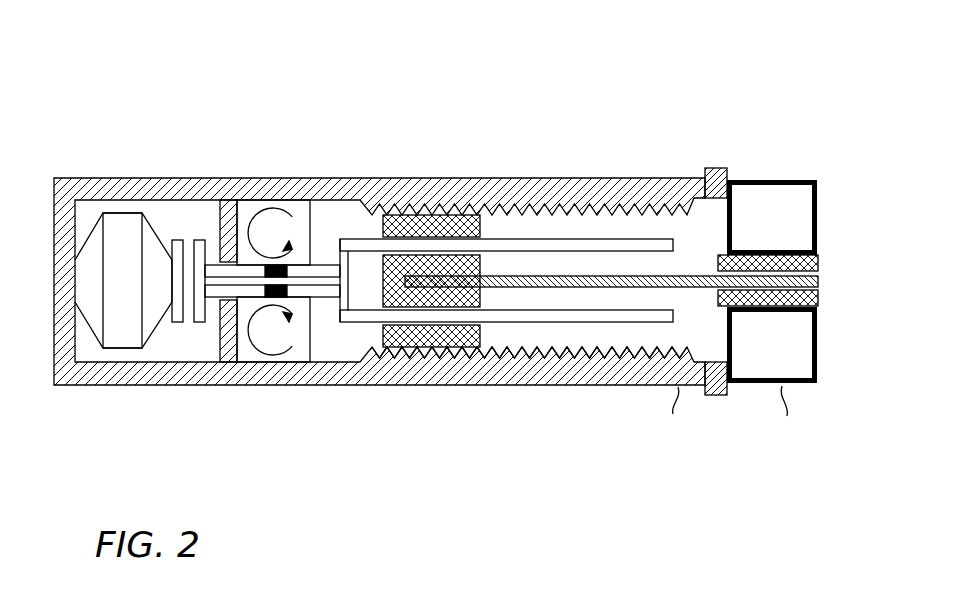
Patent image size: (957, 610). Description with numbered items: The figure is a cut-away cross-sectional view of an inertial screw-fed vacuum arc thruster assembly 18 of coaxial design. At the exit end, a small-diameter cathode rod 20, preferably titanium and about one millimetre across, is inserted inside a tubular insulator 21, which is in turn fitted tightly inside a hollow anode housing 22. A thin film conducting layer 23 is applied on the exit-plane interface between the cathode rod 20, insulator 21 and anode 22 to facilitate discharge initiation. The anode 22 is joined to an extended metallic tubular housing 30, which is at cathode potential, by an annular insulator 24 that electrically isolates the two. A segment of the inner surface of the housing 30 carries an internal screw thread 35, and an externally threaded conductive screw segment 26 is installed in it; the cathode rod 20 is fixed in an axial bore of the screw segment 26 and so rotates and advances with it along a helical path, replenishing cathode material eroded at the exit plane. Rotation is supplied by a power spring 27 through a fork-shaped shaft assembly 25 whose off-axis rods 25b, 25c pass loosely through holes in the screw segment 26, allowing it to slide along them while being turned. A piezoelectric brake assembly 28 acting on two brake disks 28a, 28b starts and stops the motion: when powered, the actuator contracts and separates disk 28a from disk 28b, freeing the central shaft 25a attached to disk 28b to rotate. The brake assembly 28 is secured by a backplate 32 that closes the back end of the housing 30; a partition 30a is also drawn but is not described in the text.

The ISF-VAT assembly 18 is at (473, 73).
The cathode rod 20 is at (818, 283).
The tubular insulator 21 is at (817, 262).
The anode housing 22 is at (818, 208).
The thin film conducting layer 23 is at (818, 300).
The annular insulator 24 is at (717, 168).
The shaft assembly 25 is at (352, 239).
The central shaft 25a is at (213, 294).
The fork rod 25b is at (518, 239).
The fork rod 25c is at (586, 322).
The screw segment 26 is at (463, 348).
The power spring 27 is at (282, 212).
The piezoelectric brake assembly 28 is at (124, 213).
The brake disk 28a is at (176, 240).
The brake disk 28b is at (200, 240).
The tubular housing 30 is at (612, 178).
The partition wall 30a is at (232, 200).
The backplate 32 is at (62, 178).
The internal screw thread 35 is at (522, 352).